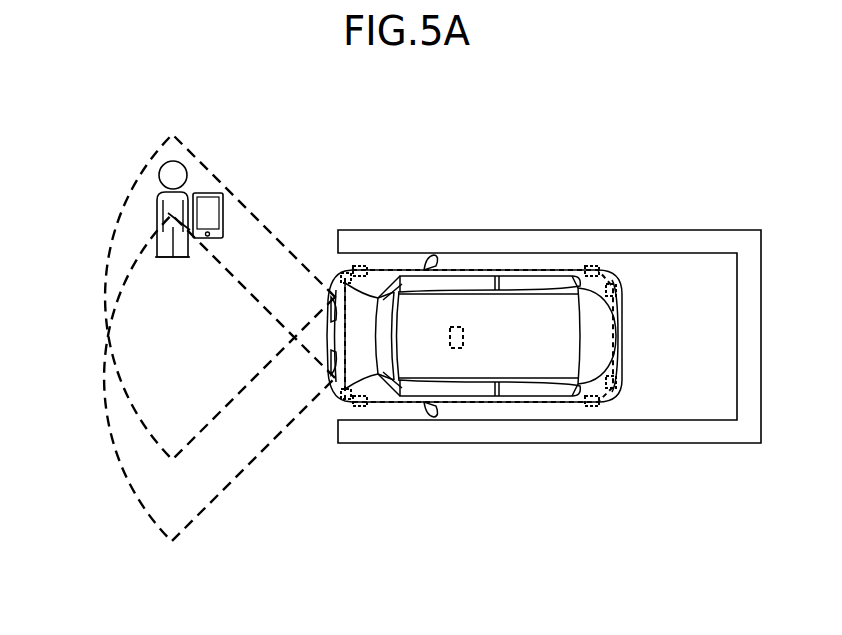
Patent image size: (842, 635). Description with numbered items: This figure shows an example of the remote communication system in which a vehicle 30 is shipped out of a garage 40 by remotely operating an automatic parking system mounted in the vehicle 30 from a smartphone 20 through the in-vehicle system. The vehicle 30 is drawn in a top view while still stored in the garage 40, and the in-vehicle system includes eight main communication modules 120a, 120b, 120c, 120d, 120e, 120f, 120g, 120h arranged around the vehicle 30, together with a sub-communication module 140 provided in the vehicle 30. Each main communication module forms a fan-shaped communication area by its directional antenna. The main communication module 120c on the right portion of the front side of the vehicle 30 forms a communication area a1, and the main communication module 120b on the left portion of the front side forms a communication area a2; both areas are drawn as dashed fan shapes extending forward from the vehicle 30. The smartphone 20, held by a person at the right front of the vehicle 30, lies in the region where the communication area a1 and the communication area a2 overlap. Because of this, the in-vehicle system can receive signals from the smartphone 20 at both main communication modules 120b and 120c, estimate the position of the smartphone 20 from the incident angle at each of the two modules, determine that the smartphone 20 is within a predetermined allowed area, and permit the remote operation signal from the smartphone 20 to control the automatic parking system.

The smartphone 20 is at (206, 193).
The vehicle 30 is at (527, 407).
The garage 40 is at (717, 230).
The main communication module 120a is at (364, 405).
The main communication module 120b is at (340, 401).
The main communication module 120c is at (338, 270).
The main communication module 120d is at (360, 268).
The main communication module 120e is at (592, 404).
The main communication module 120f is at (614, 390).
The main communication module 120g is at (613, 287).
The main communication module 120h is at (590, 268).
The sub-communication module 140 is at (458, 350).
The communication area a1 is at (127, 203).
The communication area a2 is at (117, 456).